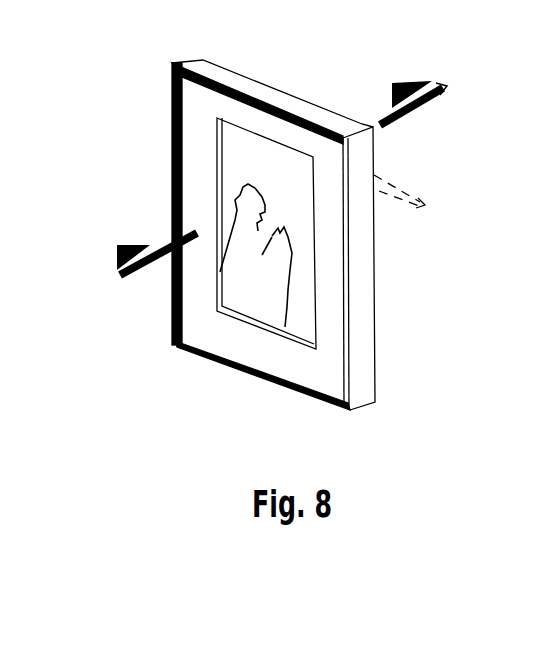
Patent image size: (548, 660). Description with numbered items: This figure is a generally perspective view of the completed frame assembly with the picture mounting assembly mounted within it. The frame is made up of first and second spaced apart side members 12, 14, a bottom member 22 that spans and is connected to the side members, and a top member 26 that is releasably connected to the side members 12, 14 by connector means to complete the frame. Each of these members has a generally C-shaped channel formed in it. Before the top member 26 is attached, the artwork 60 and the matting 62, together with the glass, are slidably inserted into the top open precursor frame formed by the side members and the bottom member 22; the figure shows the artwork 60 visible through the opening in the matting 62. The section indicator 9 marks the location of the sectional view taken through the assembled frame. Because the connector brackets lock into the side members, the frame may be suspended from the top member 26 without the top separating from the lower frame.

The section line 9- 9 is at (282, 176).
The first side member 12 is at (172, 148).
The second side member 14 is at (360, 292).
The bottom member 22 is at (238, 367).
The top member 26 is at (210, 70).
The artwork 60 is at (283, 206).
The matting 62 is at (332, 345).